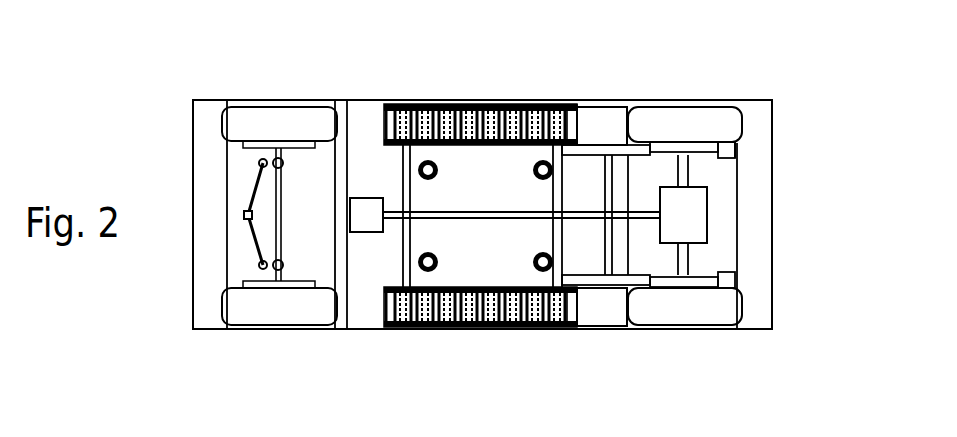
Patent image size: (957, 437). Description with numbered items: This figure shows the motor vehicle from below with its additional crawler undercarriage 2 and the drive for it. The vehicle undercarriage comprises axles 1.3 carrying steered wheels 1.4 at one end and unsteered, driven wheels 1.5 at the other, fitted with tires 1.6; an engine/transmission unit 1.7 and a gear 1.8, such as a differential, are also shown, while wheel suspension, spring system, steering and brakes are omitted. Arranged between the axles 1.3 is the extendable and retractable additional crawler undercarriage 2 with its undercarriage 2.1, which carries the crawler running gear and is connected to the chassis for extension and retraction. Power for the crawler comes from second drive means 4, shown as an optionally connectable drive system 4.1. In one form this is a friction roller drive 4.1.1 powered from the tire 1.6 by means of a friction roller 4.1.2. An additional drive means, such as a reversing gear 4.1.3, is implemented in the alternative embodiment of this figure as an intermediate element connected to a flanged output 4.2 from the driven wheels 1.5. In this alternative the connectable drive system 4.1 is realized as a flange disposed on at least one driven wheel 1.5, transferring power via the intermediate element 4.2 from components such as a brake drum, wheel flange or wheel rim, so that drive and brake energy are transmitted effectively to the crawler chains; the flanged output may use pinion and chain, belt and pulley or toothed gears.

The axles 1.3 is at (277, 247).
The steered wheels 1.4 is at (250, 122).
The unsteered/driven wheels 1.5 is at (710, 310).
The tires 1.6 is at (727, 120).
The engine/transmission unit 1.7 is at (360, 205).
The gear 1.8 is at (700, 215).
The additional crawler undercarriage 2 is at (435, 103).
The undercarriage 2.1 is at (466, 175).
The second drive means 4 is at (625, 163).
The connectable drive system 4.1 is at (625, 163).
The friction roller drive 4.1.1 is at (610, 348).
The friction roller 4.1.2 is at (612, 117).
The reversing gear 4.1.3 is at (546, 142).
The flanged output 4.2 is at (726, 158).